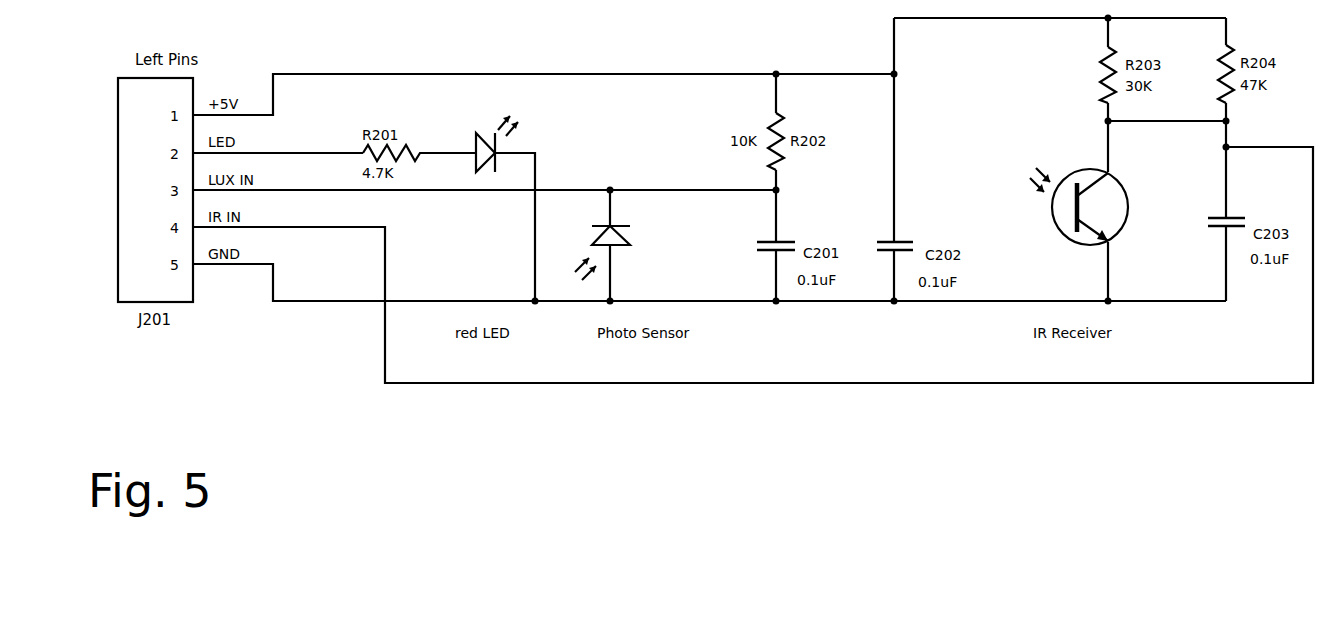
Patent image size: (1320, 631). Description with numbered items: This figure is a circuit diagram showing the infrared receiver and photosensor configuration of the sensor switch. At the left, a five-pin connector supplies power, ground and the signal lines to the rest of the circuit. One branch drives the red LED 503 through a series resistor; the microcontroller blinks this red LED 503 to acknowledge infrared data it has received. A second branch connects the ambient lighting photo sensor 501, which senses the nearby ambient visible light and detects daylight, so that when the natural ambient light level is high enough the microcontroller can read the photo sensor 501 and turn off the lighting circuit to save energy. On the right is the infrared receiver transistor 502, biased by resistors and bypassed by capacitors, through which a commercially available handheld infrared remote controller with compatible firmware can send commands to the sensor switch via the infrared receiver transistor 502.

The ambient lighting photo sensor PS1 501 is at (647, 245).
The infrared receiver transistor IR-Q1 502 is at (1068, 162).
The red LED called LED1 503 is at (525, 133).